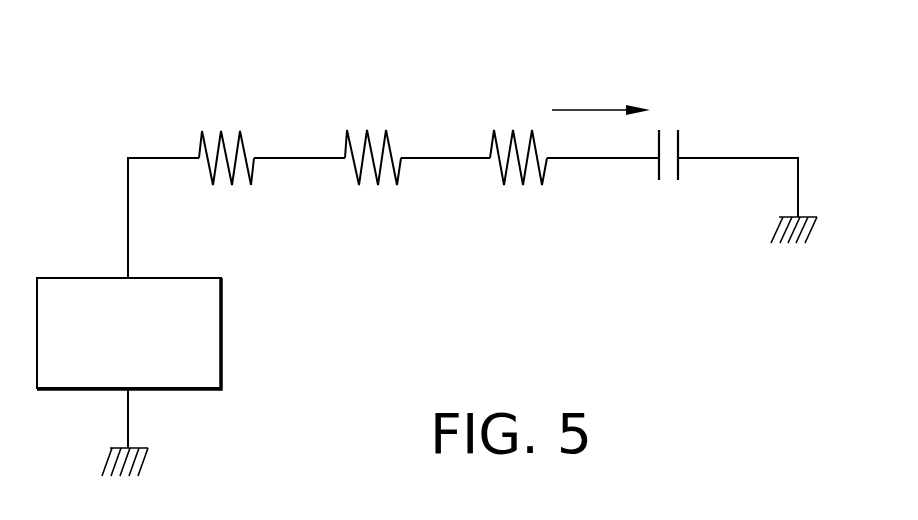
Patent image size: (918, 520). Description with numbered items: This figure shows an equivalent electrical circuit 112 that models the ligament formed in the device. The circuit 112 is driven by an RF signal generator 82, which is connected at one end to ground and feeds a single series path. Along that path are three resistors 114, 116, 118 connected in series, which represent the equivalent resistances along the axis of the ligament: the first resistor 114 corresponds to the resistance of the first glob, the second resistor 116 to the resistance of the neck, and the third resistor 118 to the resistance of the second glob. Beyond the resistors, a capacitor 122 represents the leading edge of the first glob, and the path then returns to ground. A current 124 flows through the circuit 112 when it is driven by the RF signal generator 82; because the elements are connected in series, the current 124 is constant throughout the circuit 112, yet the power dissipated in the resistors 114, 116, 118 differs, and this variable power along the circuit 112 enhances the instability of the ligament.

The RF signal generator 82 is at (198, 389).
The equivalent electrical circuit 112 is at (451, 130).
The first resistor 114 is at (507, 188).
The second resistor 116 is at (369, 188).
The third resistor 118 is at (224, 188).
The capacitor 122 is at (665, 187).
The current 124 is at (601, 95).